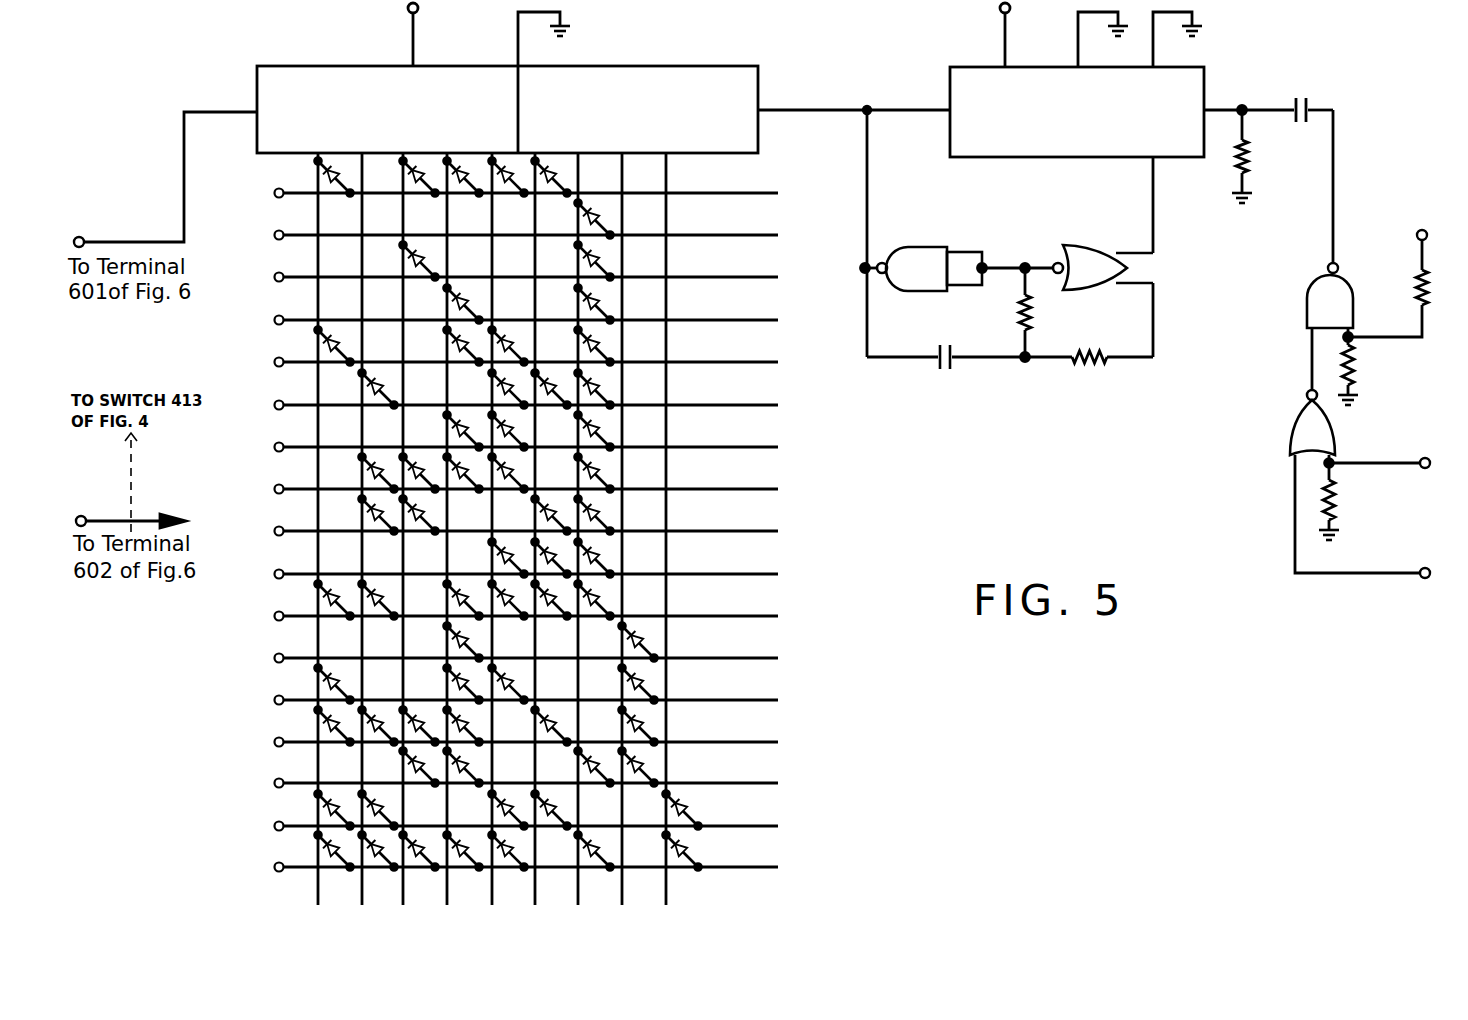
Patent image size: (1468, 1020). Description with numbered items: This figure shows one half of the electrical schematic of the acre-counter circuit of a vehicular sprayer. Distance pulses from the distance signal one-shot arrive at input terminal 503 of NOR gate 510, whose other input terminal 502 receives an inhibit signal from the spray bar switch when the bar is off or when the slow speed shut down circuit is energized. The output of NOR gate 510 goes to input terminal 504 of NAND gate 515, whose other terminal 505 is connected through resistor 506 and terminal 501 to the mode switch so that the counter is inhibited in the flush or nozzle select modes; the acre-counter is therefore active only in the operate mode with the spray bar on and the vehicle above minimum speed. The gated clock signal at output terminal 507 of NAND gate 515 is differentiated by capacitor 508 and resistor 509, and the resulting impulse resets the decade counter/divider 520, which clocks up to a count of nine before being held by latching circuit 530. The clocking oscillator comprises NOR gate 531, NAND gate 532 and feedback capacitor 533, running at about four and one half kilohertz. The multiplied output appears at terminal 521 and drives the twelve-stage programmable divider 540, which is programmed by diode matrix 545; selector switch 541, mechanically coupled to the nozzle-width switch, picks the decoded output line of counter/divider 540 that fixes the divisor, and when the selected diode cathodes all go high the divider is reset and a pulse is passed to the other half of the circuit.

The programmable divider 540 is at (654, 66).
The decade counter/divider 520 is at (1037, 157).
The terminal 521 is at (867, 110).
The latching circuit 530 is at (1007, 301).
The NOR gate 531 is at (1090, 270).
The NAND gate 532 is at (930, 270).
The feedback capacitor 533 is at (940, 365).
The diode matrix 545 is at (800, 498).
The selector switch 541 is at (148, 517).
The terminal 501 is at (1448, 210).
The input terminal 502 is at (1452, 428).
The input terminal 503 is at (1455, 540).
The input terminal 504 is at (1307, 335).
The terminal 505 is at (1355, 340).
The resistor 506 is at (1412, 287).
The output terminal 507 is at (1326, 268).
The capacitor 508 is at (1318, 65).
The resistor 509 is at (1250, 150).
The NOR gate 510 is at (1305, 432).
The NAND gate 515 is at (1328, 297).